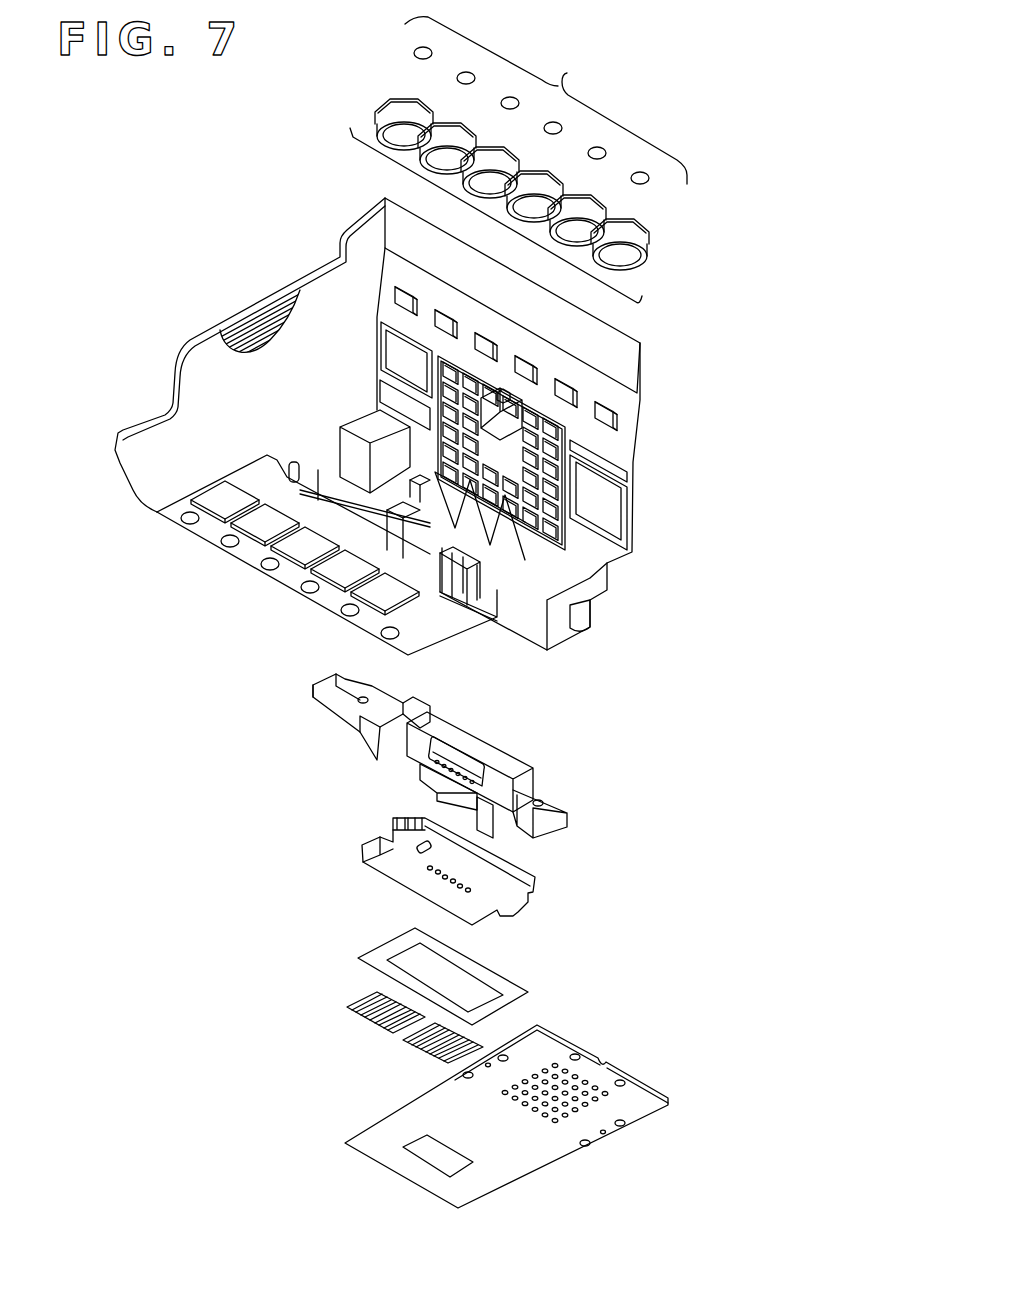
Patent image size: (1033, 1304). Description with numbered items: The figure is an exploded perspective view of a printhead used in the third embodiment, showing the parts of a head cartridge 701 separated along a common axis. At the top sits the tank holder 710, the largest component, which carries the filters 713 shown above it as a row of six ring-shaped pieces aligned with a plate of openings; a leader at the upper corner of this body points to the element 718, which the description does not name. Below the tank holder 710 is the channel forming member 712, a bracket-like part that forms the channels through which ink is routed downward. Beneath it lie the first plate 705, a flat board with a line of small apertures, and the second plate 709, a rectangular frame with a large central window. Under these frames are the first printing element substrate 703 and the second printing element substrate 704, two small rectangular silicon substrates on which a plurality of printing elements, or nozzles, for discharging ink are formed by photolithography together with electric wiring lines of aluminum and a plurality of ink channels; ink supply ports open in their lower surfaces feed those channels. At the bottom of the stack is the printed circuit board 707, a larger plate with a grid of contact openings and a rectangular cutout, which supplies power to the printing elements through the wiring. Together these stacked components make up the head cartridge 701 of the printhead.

The head cartridge 701 is at (697, 614).
The first printing element substrate 703 is at (373, 1025).
The second printing element substrate 704 is at (432, 1062).
The first plate 705 is at (533, 908).
The printed circuit board 707 is at (527, 1175).
The second plate 709 is at (518, 982).
The tank holder 710 is at (637, 441).
The channel forming member 712 is at (557, 835).
The filters 713 is at (567, 73).
The cover member 718 is at (400, 193).